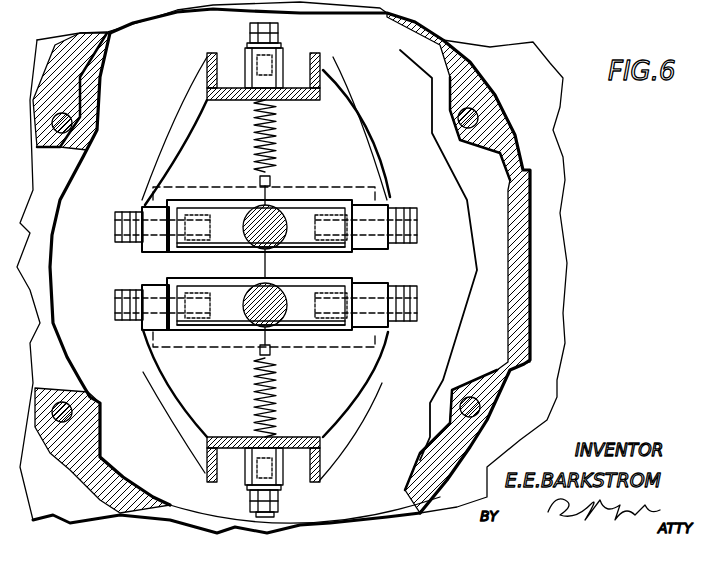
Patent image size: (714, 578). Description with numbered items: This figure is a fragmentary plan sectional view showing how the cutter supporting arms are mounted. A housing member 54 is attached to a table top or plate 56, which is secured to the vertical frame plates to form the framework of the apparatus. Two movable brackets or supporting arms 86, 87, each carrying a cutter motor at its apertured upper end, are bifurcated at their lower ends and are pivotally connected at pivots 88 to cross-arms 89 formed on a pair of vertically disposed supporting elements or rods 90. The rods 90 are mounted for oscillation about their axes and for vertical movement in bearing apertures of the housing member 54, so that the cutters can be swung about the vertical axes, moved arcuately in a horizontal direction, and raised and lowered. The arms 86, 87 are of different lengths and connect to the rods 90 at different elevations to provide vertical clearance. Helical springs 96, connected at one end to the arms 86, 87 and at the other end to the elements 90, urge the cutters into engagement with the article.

The housing member 54 is at (560, 197).
The table top or plate 56 is at (553, 258).
The movable bracket or supporting arm 86 is at (203, 438).
The movable bracket or supporting arm 87 is at (207, 88).
The pivot 88 is at (357, 232).
The cross-arm 89 is at (327, 285).
The supporting element or rod 90 is at (278, 207).
The helical spring 96 is at (253, 139).